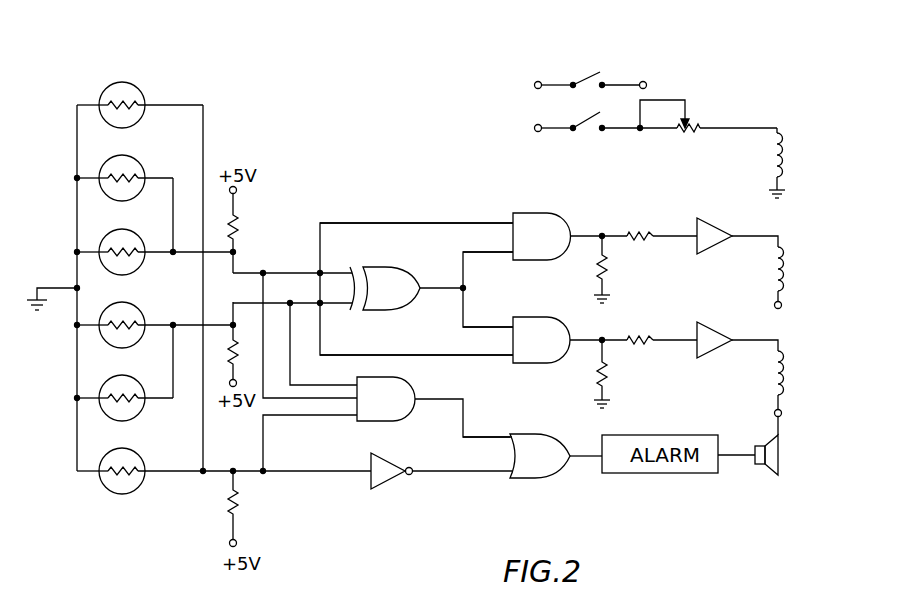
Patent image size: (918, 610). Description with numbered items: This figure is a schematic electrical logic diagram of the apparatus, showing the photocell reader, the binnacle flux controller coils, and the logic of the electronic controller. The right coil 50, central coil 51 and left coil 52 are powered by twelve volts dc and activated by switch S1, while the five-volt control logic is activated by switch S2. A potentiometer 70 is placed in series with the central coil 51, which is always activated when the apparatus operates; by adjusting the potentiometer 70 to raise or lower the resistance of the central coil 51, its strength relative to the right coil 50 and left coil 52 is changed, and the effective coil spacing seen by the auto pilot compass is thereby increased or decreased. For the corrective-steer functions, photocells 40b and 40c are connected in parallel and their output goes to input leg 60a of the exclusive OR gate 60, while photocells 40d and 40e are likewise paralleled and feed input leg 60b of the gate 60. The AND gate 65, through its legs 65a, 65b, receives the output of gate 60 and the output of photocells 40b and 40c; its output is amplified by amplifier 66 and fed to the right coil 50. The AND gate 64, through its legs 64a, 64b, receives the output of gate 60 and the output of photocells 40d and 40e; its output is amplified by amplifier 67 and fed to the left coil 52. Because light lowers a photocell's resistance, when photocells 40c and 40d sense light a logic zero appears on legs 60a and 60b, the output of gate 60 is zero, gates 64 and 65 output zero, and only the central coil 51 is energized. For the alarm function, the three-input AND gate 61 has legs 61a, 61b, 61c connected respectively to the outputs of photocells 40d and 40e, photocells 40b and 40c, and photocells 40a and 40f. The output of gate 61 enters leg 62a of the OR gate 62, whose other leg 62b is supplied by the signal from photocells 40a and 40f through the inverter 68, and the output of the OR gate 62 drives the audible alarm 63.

The photocell 40a is at (152, 72).
The photocell 40b is at (152, 145).
The photocell 40c is at (152, 219).
The photocell 40d is at (152, 292).
The photocell 40e is at (152, 365).
The photocell 40f is at (152, 438).
The right coil 50 is at (777, 272).
The central coil 51 is at (776, 161).
The left coil 52 is at (777, 380).
The exclusive OR gate 60 is at (397, 299).
The input leg 60a is at (337, 272).
The input leg 60b is at (334, 306).
The AND gate 61 is at (393, 410).
The input leg 61a is at (347, 382).
The input leg 61b is at (310, 400).
The input leg 61c is at (350, 420).
The OR gate 62 is at (548, 467).
The input leg 62a is at (476, 437).
The input leg 62b is at (502, 469).
The audible alarm 63 is at (754, 477).
The AND gate 64 is at (553, 351).
The input leg 64a is at (479, 326).
The input leg 64b is at (507, 355).
The AND gate 65 is at (553, 248).
The input leg 65a is at (497, 223).
The input leg 65b is at (499, 252).
The amplifier 66 is at (711, 225).
The amplifier 67 is at (711, 331).
The inverter 68 is at (387, 463).
The potentiometer 70 is at (684, 100).
The switch S1 is at (600, 132).
The switch S2 is at (587, 74).